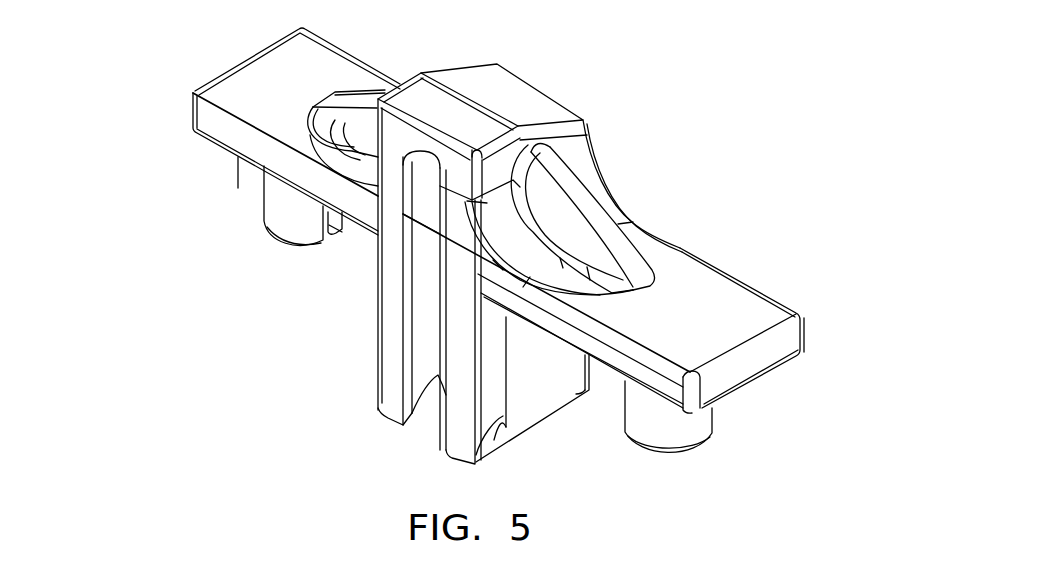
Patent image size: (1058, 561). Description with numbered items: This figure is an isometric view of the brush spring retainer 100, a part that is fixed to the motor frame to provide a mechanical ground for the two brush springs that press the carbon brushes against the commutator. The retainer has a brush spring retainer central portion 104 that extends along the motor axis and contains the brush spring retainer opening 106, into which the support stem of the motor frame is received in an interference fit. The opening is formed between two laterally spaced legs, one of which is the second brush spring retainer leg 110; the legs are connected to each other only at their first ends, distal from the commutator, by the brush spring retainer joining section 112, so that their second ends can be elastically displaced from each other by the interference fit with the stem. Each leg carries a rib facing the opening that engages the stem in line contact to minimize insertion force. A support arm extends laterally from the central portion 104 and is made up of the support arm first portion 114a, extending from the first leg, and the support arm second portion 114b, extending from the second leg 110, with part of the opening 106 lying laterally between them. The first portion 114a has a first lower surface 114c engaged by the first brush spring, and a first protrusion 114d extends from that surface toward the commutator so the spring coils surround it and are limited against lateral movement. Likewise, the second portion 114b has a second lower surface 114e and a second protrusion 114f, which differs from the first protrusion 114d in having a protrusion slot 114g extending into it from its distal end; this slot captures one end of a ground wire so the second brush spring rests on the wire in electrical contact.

The brush spring retainer 100 is at (775, 52).
The brush spring retainer central portion 104 is at (404, 274).
The brush spring retainer joining section 112 is at (463, 130).
The second brush spring retainer leg 110 is at (385, 406).
The brush spring retainer opening 106 is at (435, 416).
The support arm first portion 114a is at (742, 318).
The support arm second portion 114b is at (221, 129).
The first lower surface 114c is at (610, 367).
The first protrusion 114d is at (667, 460).
The second lower surface 114e is at (238, 170).
The second protrusion 114f is at (295, 250).
The protrusion slot 114g is at (333, 232).